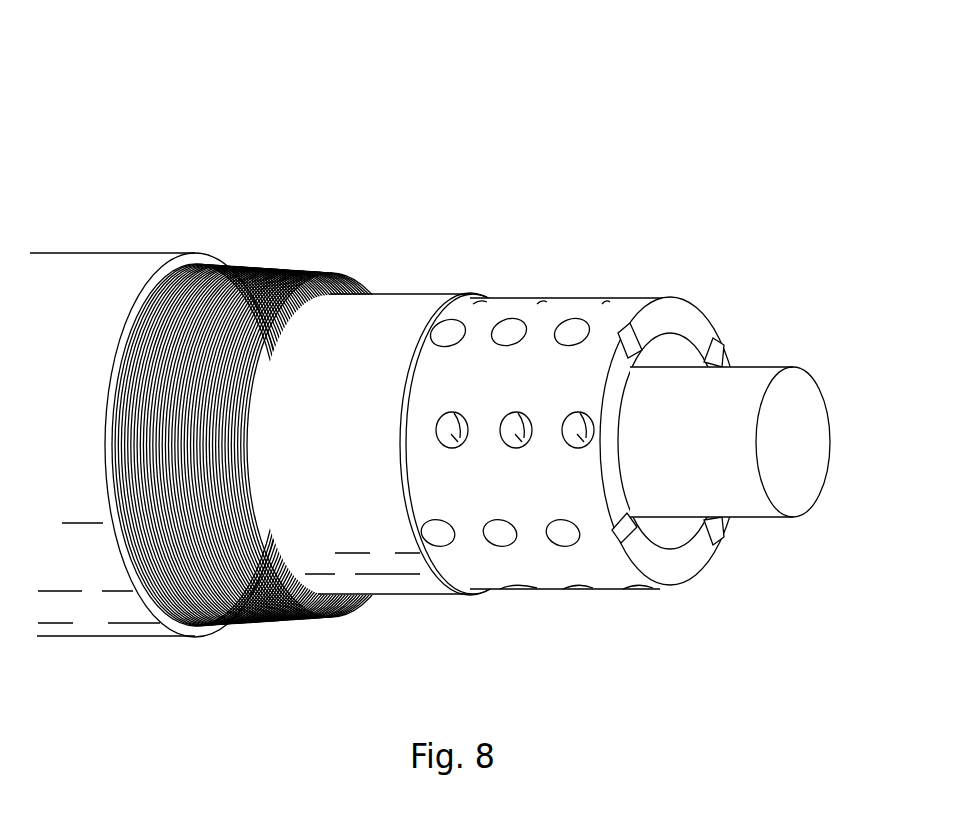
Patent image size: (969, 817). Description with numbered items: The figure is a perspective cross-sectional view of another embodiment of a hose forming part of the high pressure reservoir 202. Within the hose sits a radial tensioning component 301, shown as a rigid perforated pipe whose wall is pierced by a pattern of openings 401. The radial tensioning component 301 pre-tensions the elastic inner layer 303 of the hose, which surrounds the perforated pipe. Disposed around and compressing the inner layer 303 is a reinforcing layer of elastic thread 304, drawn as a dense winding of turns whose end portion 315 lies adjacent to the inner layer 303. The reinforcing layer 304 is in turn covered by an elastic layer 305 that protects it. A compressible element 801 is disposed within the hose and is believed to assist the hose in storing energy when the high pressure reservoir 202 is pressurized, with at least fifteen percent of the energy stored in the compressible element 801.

The high pressure reservoir 202 is at (207, 54).
The elastic layer 305 is at (105, 265).
The reinforcing layer of elastic thread 304 is at (247, 272).
The coil end 315 is at (370, 277).
The elastic inner layer 303 is at (430, 300).
The radial tensioning component 301 is at (543, 453).
The hole 401 is at (497, 540).
The compressible element 801 is at (790, 402).